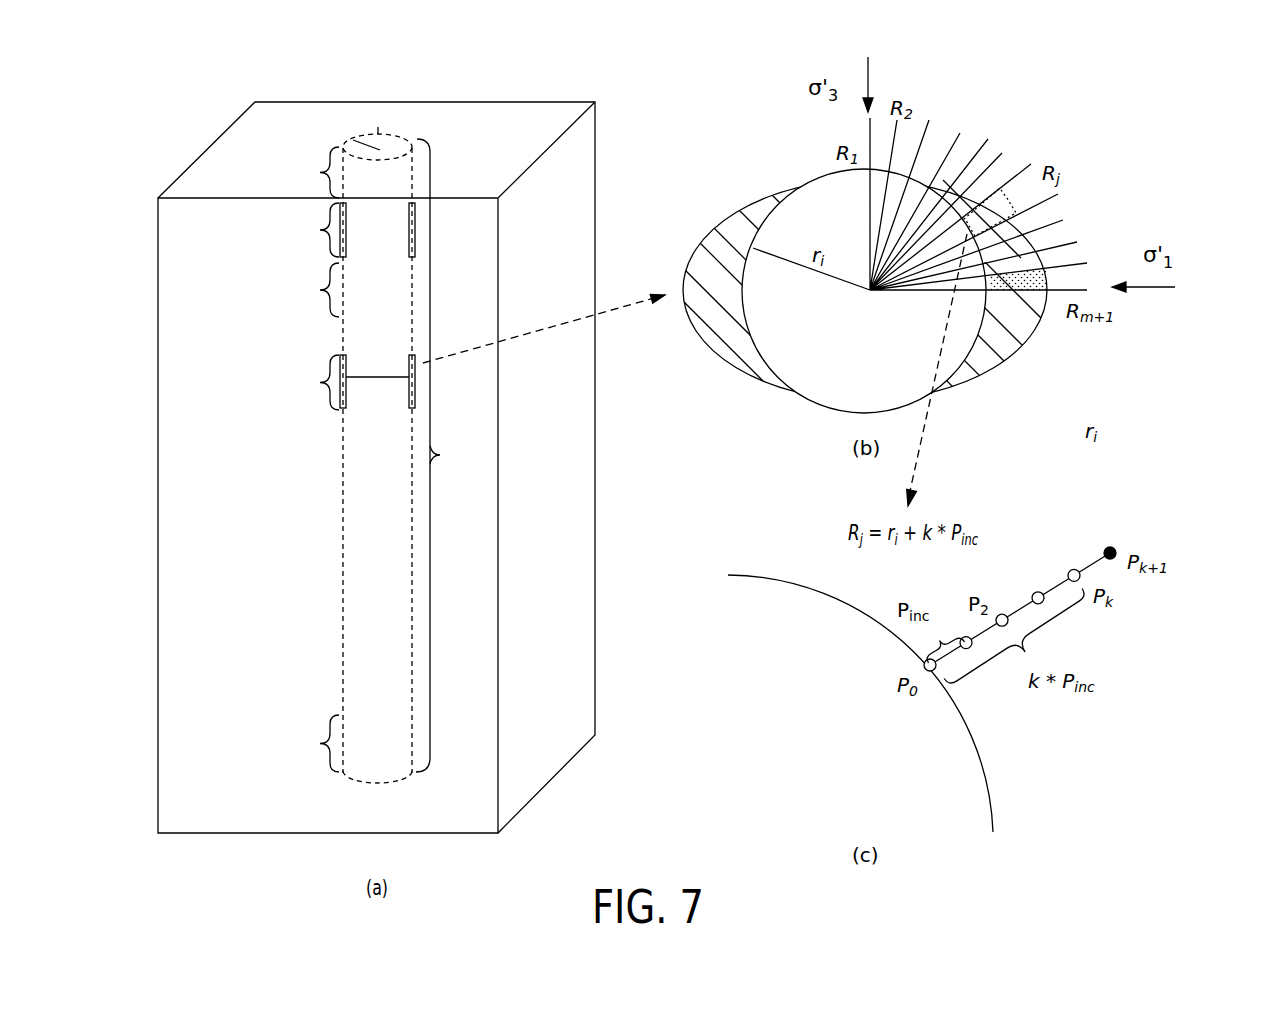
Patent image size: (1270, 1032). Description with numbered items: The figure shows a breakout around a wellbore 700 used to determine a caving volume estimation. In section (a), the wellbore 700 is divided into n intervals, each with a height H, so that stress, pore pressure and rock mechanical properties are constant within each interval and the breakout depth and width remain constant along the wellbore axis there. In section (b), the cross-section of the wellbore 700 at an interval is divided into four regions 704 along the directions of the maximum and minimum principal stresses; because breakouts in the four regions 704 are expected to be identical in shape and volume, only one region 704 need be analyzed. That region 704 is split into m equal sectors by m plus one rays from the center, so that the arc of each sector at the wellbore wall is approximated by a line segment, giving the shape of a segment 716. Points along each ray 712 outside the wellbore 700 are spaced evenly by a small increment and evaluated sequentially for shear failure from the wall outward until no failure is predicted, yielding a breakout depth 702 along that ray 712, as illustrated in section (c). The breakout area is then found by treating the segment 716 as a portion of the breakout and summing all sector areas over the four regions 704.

The wellbore 700 is at (370, 765).
The breakout depth 702 is at (413, 372).
The region 704 is at (1018, 160).
The ray 712 is at (981, 177).
The segment 716 is at (1023, 297).